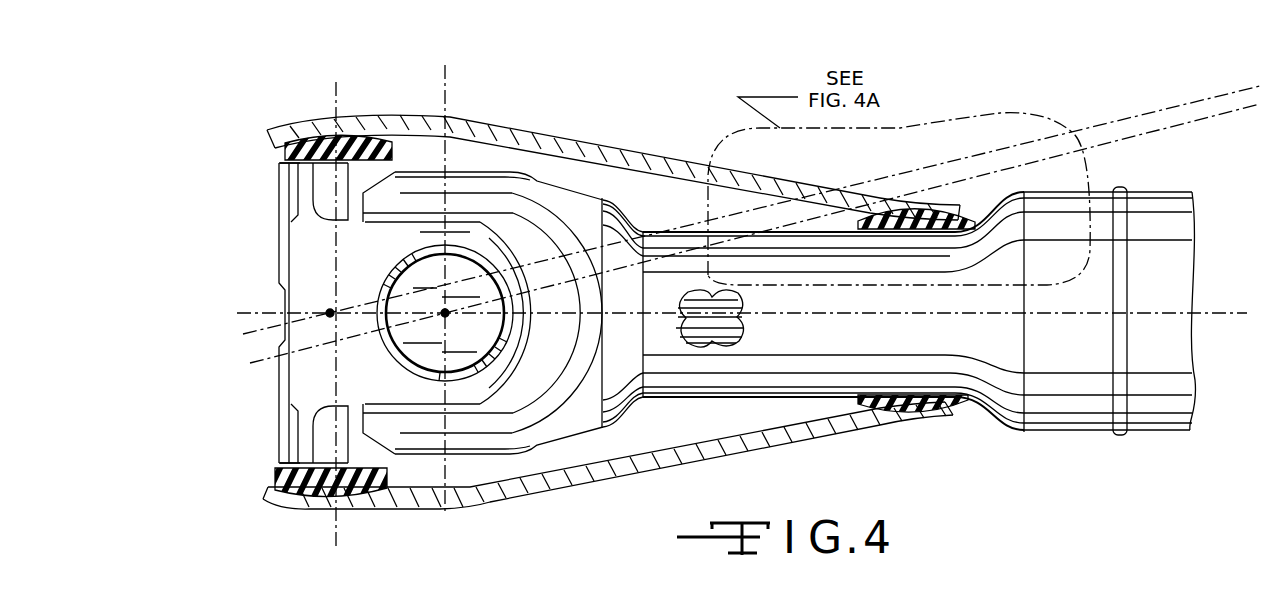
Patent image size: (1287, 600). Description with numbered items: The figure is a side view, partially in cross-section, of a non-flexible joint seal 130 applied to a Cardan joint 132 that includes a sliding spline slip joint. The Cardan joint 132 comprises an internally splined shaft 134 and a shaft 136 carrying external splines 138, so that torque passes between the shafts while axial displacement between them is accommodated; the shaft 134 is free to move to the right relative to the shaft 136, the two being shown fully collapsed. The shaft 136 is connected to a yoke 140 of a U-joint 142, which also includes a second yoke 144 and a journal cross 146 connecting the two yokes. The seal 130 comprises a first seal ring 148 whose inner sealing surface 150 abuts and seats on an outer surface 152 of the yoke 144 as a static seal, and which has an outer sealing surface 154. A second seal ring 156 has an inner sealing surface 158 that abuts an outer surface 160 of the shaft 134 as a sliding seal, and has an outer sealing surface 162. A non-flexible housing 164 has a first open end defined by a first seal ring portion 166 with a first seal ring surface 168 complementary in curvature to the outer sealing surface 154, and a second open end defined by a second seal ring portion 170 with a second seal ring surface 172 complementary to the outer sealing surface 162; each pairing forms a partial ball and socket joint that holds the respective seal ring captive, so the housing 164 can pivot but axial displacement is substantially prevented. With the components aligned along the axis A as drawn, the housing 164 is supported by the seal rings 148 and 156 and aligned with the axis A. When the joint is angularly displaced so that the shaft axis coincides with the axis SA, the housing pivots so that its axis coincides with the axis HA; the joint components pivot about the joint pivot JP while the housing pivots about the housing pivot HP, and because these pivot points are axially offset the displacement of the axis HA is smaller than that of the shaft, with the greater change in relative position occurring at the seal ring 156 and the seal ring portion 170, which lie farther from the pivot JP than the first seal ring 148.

The non-flexible joint seal 130 is at (668, 322).
The Cardan joint 132 is at (220, 355).
The shaft 134 is at (919, 333).
The shaft 136 is at (503, 298).
The external splines 138 is at (700, 330).
The yoke 140 is at (513, 170).
The U-joint 142 is at (512, 459).
The second yoke 144 is at (357, 141).
The journal cross 146 is at (395, 284).
The first seal ring 148 is at (270, 476).
The inner sealing surface 150 is at (297, 178).
The outer surface 152 is at (290, 490).
The outer sealing surface 154 is at (318, 490).
The second seal ring 156 is at (968, 212).
The inner sealing surface 158 is at (932, 233).
The outer surface 160 is at (803, 412).
The outer sealing surface 162 is at (957, 200).
The non-flexible housing 164 is at (568, 133).
The first seal ring portion 166 is at (343, 511).
The first seal ring surface 168 is at (368, 411).
The second seal ring portion 170 is at (915, 433).
The second seal ring surface 172 is at (893, 396).
The housing pivot HP is at (330, 313).
The joint pivot JP is at (445, 313).
The shaft axis SA is at (1175, 107).
The housing axis HA is at (1175, 125).
The axis A is at (1060, 312).